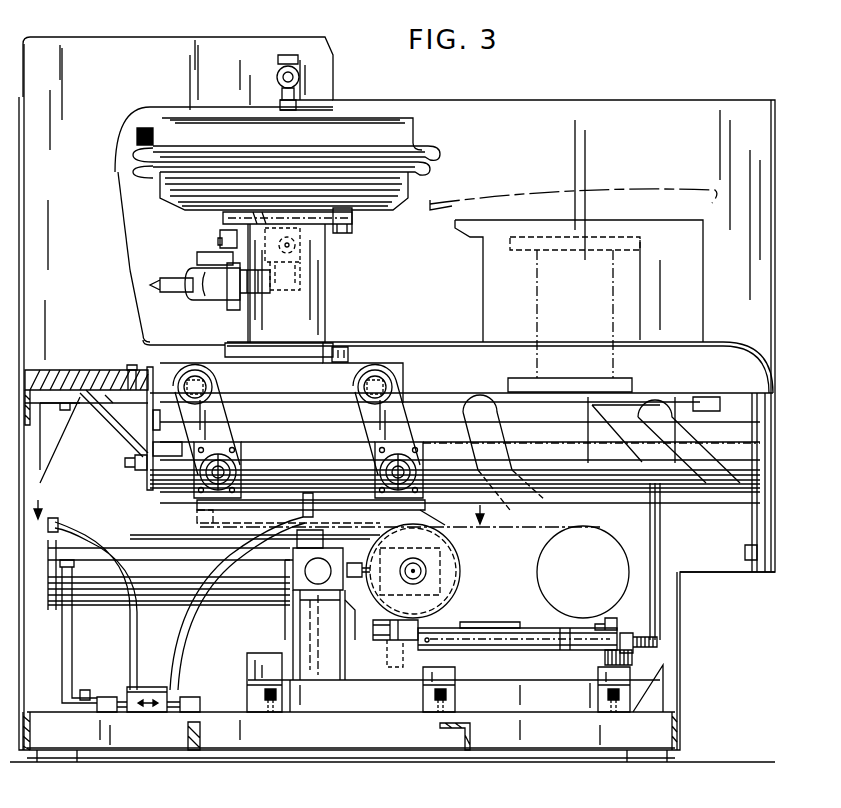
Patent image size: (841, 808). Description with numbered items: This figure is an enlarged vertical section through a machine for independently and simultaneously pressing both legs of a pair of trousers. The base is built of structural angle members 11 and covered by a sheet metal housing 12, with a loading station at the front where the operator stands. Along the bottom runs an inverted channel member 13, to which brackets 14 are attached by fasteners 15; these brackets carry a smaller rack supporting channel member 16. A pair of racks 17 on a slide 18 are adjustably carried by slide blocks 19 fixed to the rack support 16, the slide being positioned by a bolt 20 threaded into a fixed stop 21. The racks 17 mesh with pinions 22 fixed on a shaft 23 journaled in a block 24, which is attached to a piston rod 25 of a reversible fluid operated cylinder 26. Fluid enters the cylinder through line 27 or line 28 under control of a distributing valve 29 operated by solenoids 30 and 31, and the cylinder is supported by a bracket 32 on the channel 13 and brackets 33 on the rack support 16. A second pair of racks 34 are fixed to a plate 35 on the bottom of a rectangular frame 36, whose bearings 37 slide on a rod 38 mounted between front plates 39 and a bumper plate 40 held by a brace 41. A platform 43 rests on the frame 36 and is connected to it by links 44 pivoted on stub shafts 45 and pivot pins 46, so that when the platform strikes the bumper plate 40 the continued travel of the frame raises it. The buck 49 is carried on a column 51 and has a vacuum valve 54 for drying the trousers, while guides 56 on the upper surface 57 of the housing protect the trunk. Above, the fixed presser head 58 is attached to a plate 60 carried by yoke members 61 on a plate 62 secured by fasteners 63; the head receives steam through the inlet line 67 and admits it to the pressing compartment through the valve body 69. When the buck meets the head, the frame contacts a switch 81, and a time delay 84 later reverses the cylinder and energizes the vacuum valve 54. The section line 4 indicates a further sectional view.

The section line 4- 4 is at (264, 502).
The structural angle members 11 is at (665, 605).
The sheet metal housing 12 is at (748, 758).
The inverted channel member 13 is at (313, 738).
The brackets 14 is at (258, 680).
The fasteners 15 is at (265, 695).
The rack supporting channel member 16 is at (360, 673).
The racks 17 is at (487, 621).
The slide 18 is at (385, 639).
The slide blocks 19 is at (392, 651).
The bolt 20 is at (642, 642).
The fixed stop 21 is at (622, 629).
The pinions 22 is at (456, 558).
The shaft 23 is at (428, 576).
The block 24 is at (368, 552).
The piston rod 25 is at (345, 606).
The reversible fluid operated cylinder 26 is at (232, 601).
The line 27 is at (195, 621).
The line 28 is at (128, 626).
The distributing valve 29 is at (132, 704).
The solenoid 30 is at (108, 697).
The solenoid 31 is at (191, 697).
The bracket 32 is at (65, 648).
The brackets 33 is at (300, 633).
The racks 34 is at (420, 525).
The plate 35 is at (228, 506).
The frame 36 is at (346, 458).
The bushings or bearings 37 is at (460, 460).
The rod 38 is at (455, 485).
The plates 39 is at (745, 554).
The bumper plate 40 is at (148, 426).
The brace 41 is at (97, 419).
The platform 43 is at (402, 374).
The links 44 is at (222, 418).
The stub shafts 45 is at (208, 481).
The pivot pins 46 is at (214, 386).
The buck 49 is at (404, 206).
The columns 51 is at (312, 298).
The vacuum valve 54 is at (215, 298).
The guides 56 is at (695, 279).
The upper surface 57 is at (443, 340).
The presser head 58 is at (400, 135).
The plate 60 is at (335, 108).
The brackets or yoke members 61 is at (182, 55).
The plate 62 is at (64, 372).
The fasteners 63 is at (134, 367).
The steam inlet line 67 is at (148, 127).
The valve body 69 is at (280, 78).
The switch 81 is at (180, 442).
The time delay 84 is at (131, 463).